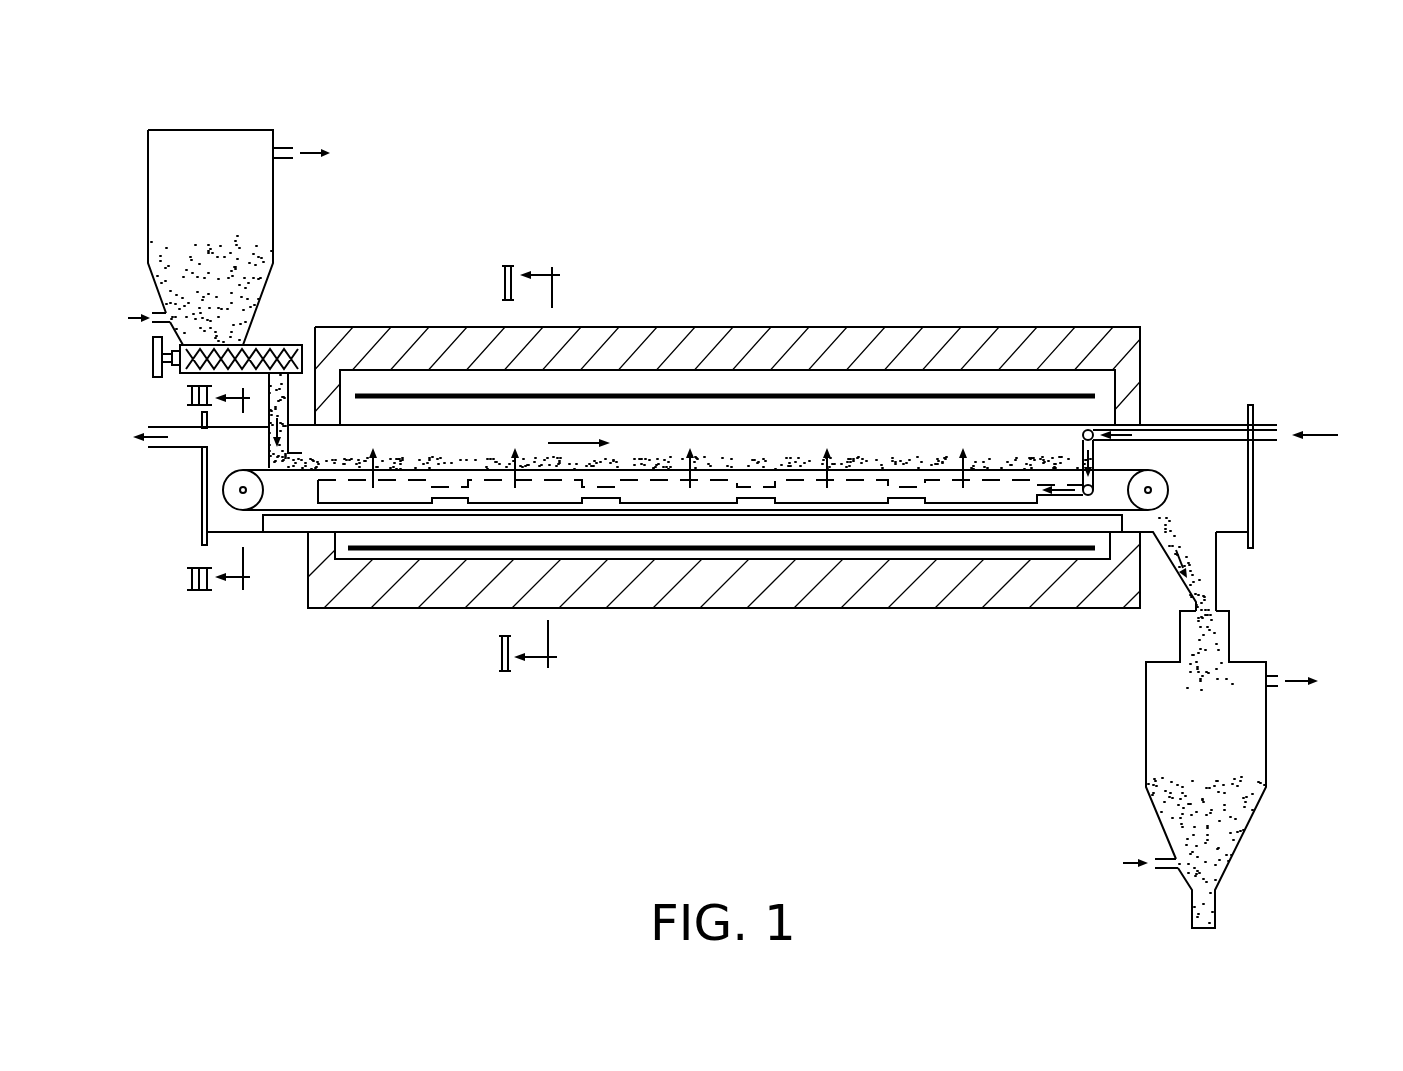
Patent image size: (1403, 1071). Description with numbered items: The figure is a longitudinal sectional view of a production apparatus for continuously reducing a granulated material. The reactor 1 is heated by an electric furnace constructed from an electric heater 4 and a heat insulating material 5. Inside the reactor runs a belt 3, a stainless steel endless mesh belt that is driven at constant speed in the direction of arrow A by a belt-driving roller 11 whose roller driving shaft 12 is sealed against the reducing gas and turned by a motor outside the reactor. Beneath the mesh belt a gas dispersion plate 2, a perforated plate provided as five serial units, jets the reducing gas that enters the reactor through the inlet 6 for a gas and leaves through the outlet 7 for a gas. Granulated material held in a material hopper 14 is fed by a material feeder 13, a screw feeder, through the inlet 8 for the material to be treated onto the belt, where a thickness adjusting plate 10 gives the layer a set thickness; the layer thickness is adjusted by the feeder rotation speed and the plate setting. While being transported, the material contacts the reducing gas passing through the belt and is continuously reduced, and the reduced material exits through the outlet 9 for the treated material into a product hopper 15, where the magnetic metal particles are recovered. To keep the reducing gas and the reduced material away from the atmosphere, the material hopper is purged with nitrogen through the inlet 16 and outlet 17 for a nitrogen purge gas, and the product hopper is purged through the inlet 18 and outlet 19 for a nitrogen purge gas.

The reactor 1 is at (1168, 424).
The gas dispersion plate 2 is at (977, 480).
The belt 3 is at (770, 463).
The electric heater 4 is at (693, 396).
The heat insulating material 5 is at (625, 345).
The inlet for a gas 6 is at (1270, 438).
The outlet for a gas 7 is at (160, 428).
The inlet for a material to be treated 8 is at (302, 452).
The outlet for a treated material 9 is at (1218, 600).
The thickness adjusting plate 10 is at (305, 458).
The belt-driving roller 11 is at (226, 475).
The roller driving shaft 12 is at (243, 493).
The material feeder 13 is at (242, 345).
The material hopper 14 is at (184, 131).
The product hopper 15 is at (1268, 782).
The inlet for a nitrogen purge gas 16 is at (158, 313).
The outlet for a nitrogen purge gas 17 is at (288, 148).
The inlet for a nitrogen purge gas 18 is at (1158, 866).
The outlet for a nitrogen purge gas 19 is at (1280, 678).